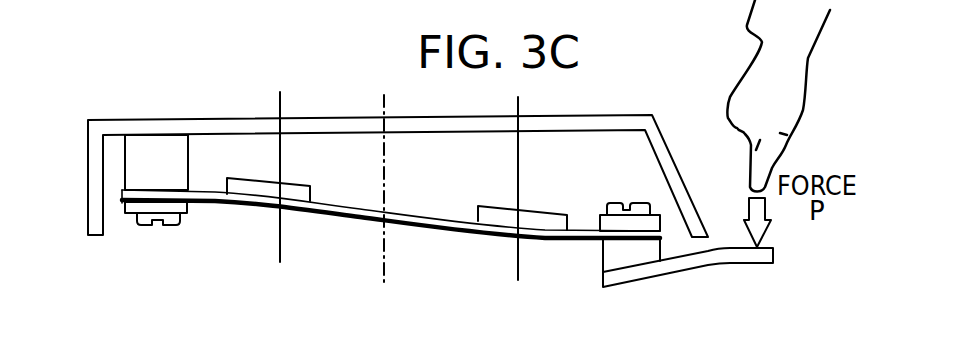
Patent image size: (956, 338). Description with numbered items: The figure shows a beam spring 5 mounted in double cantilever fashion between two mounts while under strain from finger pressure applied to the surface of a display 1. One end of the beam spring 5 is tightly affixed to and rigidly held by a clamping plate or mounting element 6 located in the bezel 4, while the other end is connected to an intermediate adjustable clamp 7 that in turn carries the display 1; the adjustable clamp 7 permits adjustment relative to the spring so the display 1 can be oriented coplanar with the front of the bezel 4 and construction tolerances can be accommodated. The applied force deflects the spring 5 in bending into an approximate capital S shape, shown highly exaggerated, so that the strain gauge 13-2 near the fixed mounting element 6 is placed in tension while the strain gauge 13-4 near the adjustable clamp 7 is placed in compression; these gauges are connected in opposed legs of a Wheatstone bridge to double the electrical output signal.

The display 1 is at (750, 263).
The bezel 4 is at (105, 128).
The beam spring 5 is at (205, 204).
The mounting element 6 is at (168, 150).
The adjustable clamp 7 is at (608, 257).
The strain gauge 13-2 is at (323, 168).
The strain gauge 13-4 is at (577, 182).